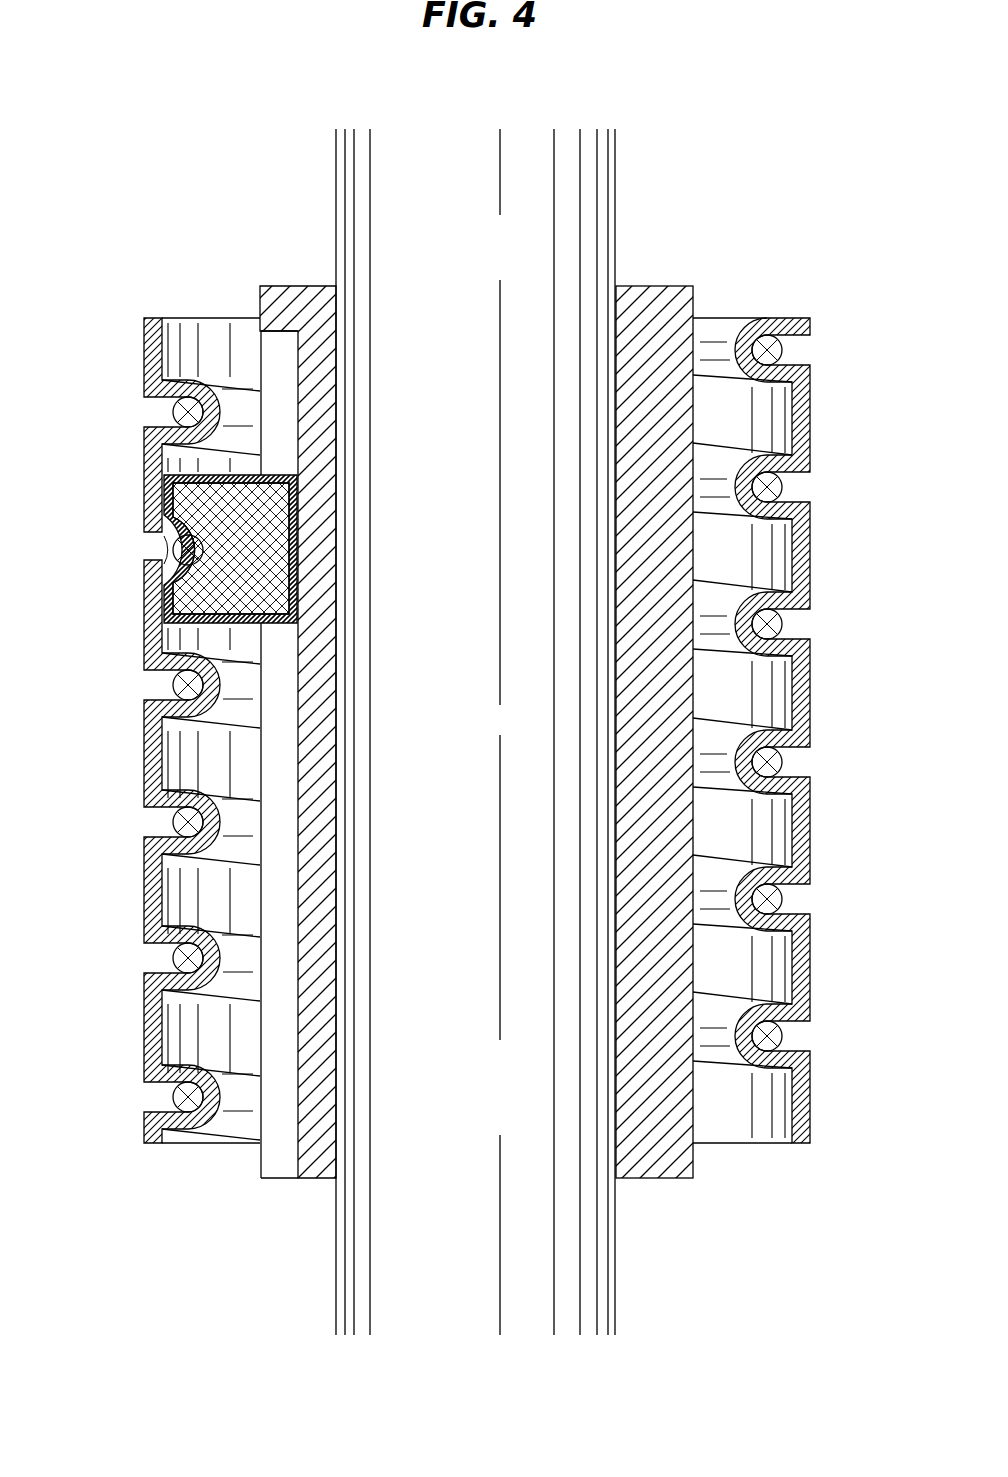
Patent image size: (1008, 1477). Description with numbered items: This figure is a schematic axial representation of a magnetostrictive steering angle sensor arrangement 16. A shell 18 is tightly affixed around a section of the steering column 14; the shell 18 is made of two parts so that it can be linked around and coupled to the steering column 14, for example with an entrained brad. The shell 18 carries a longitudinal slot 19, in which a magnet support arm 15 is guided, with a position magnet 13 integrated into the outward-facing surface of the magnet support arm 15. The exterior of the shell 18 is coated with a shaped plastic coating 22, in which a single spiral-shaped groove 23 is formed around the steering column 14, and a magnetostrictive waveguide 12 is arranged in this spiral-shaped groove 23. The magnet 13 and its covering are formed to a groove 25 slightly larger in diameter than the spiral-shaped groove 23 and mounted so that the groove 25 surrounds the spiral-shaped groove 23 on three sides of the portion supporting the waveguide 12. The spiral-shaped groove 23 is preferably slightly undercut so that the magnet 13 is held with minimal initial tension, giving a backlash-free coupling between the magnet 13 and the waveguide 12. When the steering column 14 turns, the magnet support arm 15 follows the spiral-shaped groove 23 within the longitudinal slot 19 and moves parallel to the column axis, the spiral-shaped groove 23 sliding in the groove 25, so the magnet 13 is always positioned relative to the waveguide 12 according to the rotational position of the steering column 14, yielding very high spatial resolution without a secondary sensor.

The magnetostrictive waveguide 12 is at (186, 683).
The position magnet 13 is at (268, 567).
The steering column 14 is at (537, 767).
The magnet support arm 15 is at (297, 540).
The steering angle sensor arrangement 16 is at (768, 226).
The shell 18 is at (651, 286).
The longitudinal slot 19 is at (278, 362).
The shaped plastic coating 22 is at (143, 373).
The spiral-shaped groove 23 is at (150, 412).
The groove 25 is at (165, 540).